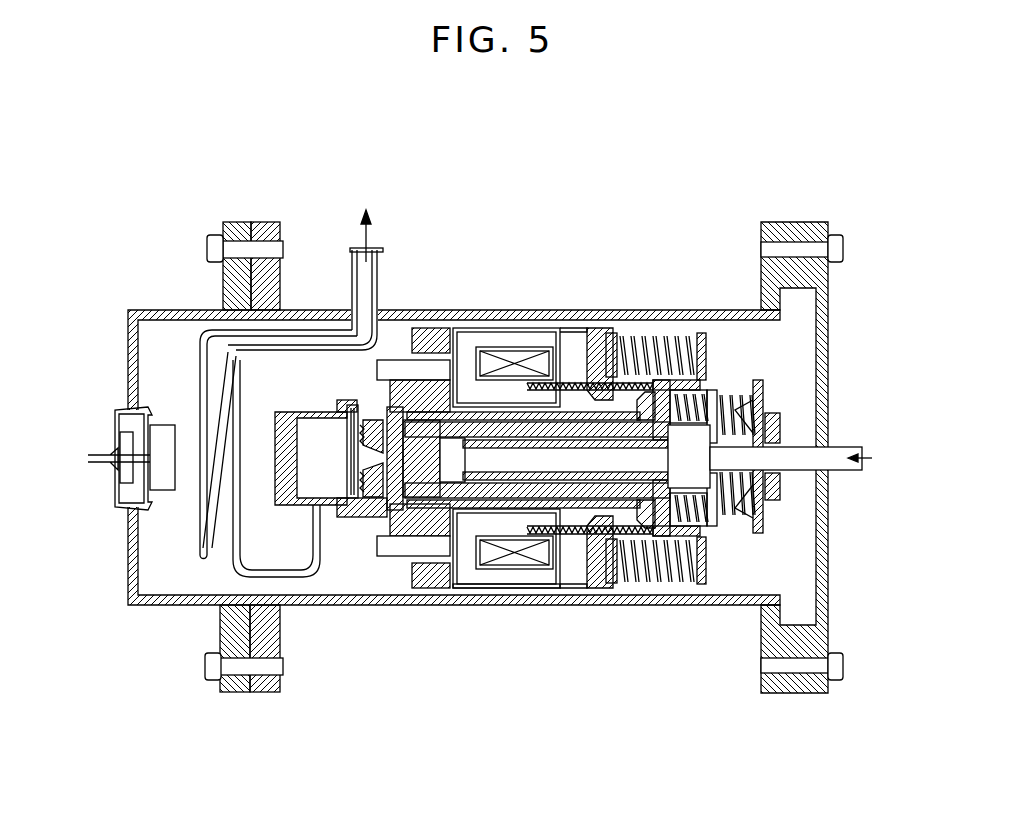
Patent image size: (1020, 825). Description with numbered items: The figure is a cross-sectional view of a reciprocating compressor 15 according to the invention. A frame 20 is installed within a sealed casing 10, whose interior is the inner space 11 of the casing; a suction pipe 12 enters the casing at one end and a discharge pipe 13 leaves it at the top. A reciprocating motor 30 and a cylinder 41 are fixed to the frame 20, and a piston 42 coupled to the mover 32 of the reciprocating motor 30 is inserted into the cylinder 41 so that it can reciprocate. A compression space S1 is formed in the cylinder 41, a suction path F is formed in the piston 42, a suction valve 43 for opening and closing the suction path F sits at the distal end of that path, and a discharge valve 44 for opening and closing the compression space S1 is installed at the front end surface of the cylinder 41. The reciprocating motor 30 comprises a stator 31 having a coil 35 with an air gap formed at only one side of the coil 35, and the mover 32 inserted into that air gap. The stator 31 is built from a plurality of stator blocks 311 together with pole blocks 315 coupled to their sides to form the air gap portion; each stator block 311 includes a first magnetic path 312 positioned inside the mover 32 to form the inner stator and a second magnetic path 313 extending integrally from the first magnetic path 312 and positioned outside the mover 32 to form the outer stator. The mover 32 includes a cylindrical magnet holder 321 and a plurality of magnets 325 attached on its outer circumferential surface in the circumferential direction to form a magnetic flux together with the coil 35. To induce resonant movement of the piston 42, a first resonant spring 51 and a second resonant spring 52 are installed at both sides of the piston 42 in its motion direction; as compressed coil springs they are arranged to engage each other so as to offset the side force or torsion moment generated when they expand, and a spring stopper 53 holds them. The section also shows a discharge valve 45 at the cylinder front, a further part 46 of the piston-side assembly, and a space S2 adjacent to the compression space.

The sealed casing 10 is at (540, 318).
The inner space of the casing 11 is at (752, 568).
The suction pipe 12 is at (845, 445).
The discharge pipe 13 is at (378, 268).
The reciprocating compressor 15 is at (262, 724).
The frame 20 is at (443, 582).
The reciprocating motor 30 is at (570, 237).
The stator 31 is at (553, 333).
The mover 32 is at (590, 476).
The coil 35 is at (515, 365).
The cylinder 41 is at (420, 570).
The piston 42 is at (408, 525).
The suction valve 43 is at (390, 518).
The discharge valve 44 is at (372, 506).
The discharge valve 45 is at (348, 508).
The bearing housing 46 is at (322, 505).
The first resonant spring 51 is at (668, 338).
The second resonant spring 52 is at (722, 396).
The spring stopper 53 is at (702, 332).
The stator block 311 is at (455, 660).
The first magnetic path 312 is at (513, 515).
The second magnetic path 313 is at (482, 582).
The pole block 315 is at (568, 586).
The magnet holder 321 is at (620, 530).
The magnet 325 is at (595, 562).
The compression space S1 is at (395, 440).
The second space S2 is at (317, 435).
The suction path F is at (553, 449).